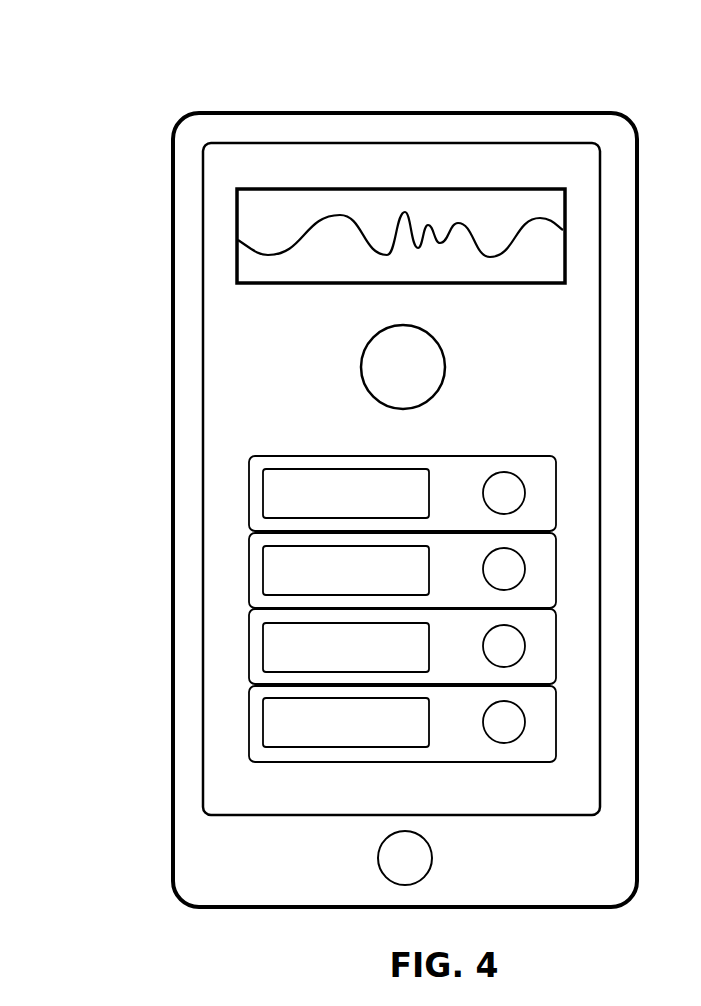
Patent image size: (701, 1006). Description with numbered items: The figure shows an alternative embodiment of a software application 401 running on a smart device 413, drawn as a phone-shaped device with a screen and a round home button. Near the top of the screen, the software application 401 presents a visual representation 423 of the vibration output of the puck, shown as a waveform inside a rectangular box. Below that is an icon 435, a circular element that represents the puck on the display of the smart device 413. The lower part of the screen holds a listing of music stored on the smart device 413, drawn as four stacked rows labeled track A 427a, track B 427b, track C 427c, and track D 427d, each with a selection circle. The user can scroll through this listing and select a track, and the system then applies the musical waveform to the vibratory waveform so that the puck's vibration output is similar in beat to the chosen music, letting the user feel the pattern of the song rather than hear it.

The software application 401 is at (150, 108).
The visual representation 423 is at (348, 308).
The icon 435 is at (382, 377).
The track A 427a is at (410, 507).
The track B 427b is at (410, 584).
The track C 427c is at (413, 659).
The track D 427d is at (417, 736).
The smart device 413 is at (503, 874).